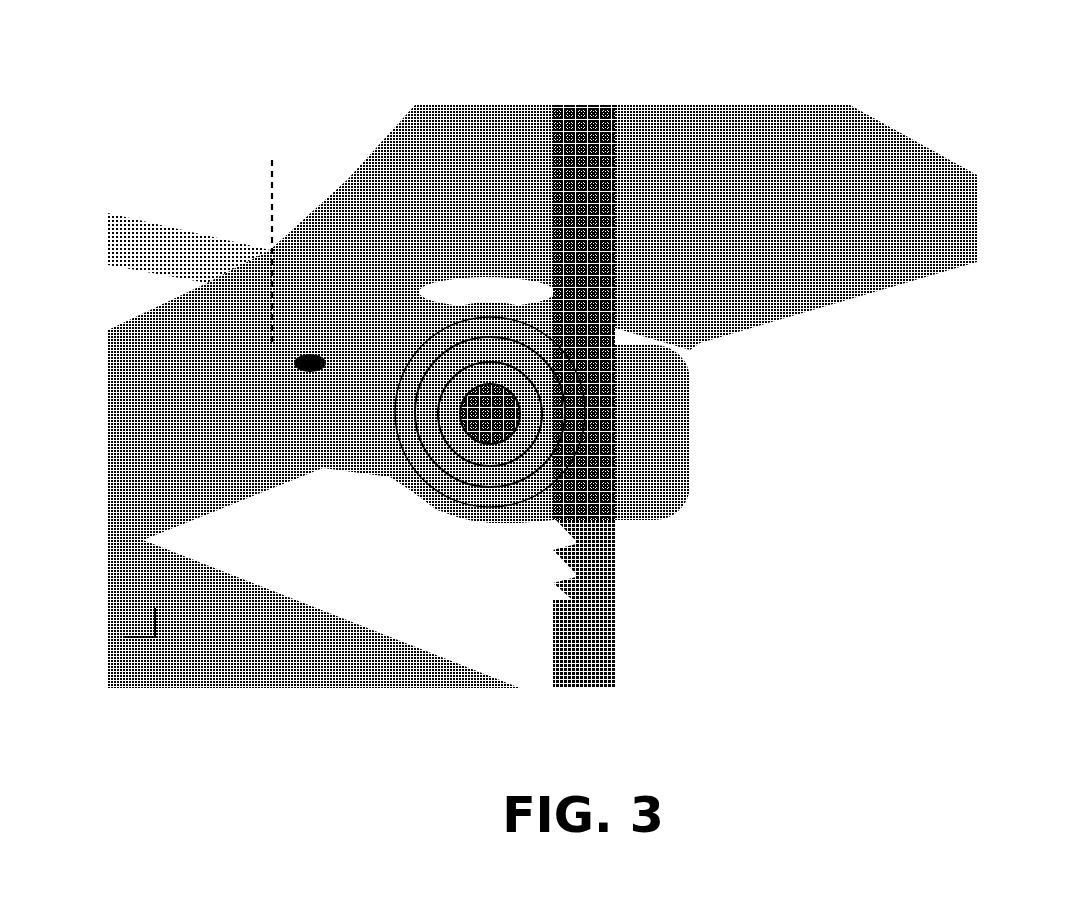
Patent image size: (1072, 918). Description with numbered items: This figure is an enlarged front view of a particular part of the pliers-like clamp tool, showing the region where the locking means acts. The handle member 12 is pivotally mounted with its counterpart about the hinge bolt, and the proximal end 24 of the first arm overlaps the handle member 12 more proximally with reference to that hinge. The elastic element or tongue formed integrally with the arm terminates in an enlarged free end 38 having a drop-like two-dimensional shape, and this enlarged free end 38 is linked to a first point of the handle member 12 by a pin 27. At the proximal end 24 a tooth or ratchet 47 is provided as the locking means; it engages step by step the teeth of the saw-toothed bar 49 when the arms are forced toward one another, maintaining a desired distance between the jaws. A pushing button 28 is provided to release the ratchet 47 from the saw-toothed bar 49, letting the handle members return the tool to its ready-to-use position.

The handle member 12 is at (455, 195).
The proximal end 24 is at (682, 447).
The pin 27 is at (312, 360).
The pushing button 28 is at (490, 393).
The enlarged free end 38 is at (271, 232).
The ratchet 47 is at (547, 412).
The saw-toothed bar 49 is at (560, 552).